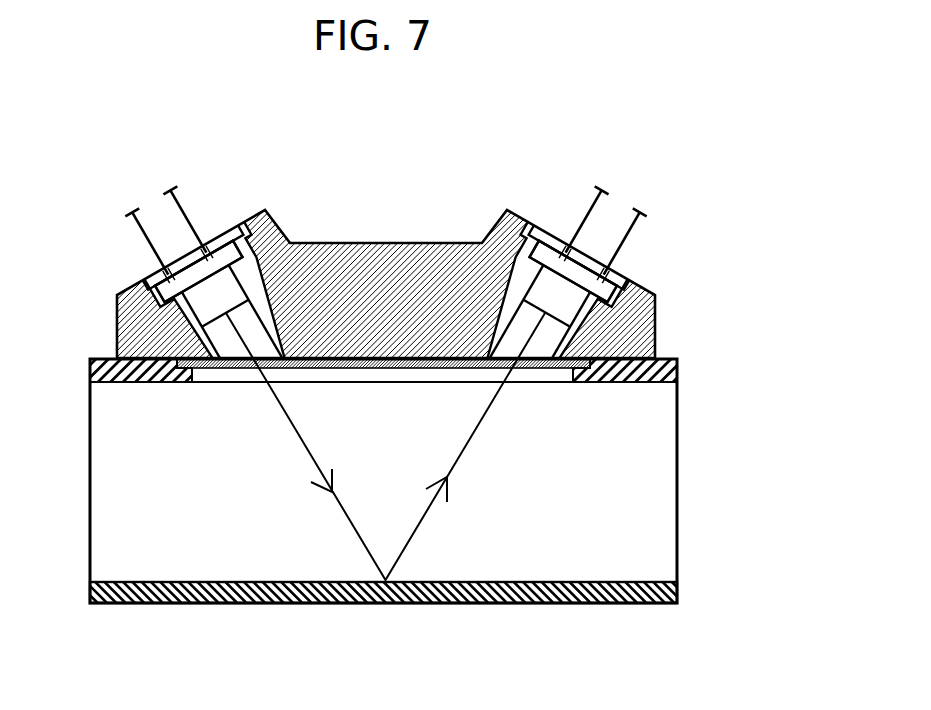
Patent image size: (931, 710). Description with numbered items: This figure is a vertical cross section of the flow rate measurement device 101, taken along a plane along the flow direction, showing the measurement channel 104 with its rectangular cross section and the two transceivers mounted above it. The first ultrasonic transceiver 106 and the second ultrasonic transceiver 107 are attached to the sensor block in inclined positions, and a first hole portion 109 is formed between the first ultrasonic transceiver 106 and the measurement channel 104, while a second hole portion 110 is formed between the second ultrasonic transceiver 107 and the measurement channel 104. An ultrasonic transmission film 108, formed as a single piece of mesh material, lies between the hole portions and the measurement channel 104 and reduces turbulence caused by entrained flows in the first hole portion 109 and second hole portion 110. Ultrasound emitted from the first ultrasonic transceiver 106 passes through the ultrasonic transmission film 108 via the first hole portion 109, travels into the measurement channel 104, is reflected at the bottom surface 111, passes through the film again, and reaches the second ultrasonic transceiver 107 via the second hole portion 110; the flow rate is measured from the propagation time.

The ultrasonic sensor unit 101 is at (409, 235).
The measurement channel 104 is at (598, 437).
The first ultrasonic transceiver 106 is at (160, 275).
The second ultrasonic transceiver 107 is at (600, 273).
The ultrasonic transmission film 108 is at (587, 340).
The first hole portion 109 is at (270, 330).
The second hole portion 110 is at (503, 337).
The bottom surface 111 is at (532, 582).